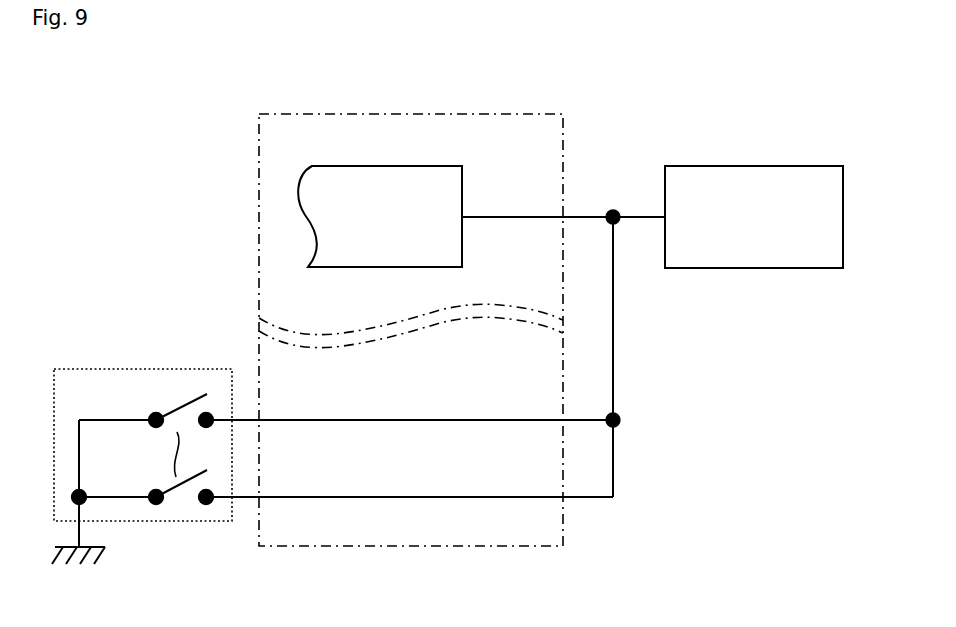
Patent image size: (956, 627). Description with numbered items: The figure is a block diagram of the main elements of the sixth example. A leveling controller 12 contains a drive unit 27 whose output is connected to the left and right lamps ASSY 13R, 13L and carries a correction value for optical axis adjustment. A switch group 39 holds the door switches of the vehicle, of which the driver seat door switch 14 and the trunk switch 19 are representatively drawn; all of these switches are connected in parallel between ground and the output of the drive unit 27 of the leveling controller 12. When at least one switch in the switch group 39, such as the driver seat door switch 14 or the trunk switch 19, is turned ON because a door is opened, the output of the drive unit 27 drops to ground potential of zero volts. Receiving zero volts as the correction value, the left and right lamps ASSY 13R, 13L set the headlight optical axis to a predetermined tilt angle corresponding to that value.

The leveling controller 12 is at (462, 115).
The right lamp ASSY 13R is at (758, 192).
The left lamp ASSY 13L is at (730, 165).
The drive unit 27 is at (462, 253).
The switch group 39 is at (107, 367).
The driver seat door switch 14 is at (174, 390).
The trunk switch 19 is at (175, 505).